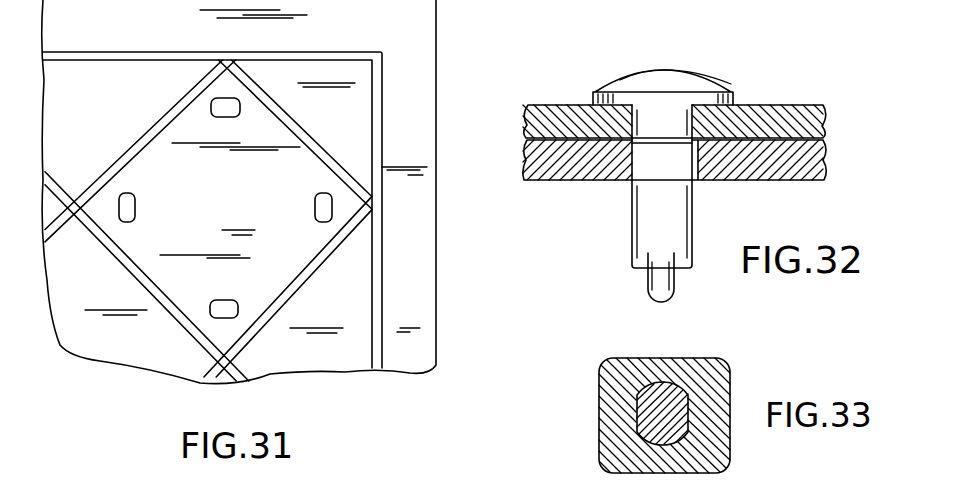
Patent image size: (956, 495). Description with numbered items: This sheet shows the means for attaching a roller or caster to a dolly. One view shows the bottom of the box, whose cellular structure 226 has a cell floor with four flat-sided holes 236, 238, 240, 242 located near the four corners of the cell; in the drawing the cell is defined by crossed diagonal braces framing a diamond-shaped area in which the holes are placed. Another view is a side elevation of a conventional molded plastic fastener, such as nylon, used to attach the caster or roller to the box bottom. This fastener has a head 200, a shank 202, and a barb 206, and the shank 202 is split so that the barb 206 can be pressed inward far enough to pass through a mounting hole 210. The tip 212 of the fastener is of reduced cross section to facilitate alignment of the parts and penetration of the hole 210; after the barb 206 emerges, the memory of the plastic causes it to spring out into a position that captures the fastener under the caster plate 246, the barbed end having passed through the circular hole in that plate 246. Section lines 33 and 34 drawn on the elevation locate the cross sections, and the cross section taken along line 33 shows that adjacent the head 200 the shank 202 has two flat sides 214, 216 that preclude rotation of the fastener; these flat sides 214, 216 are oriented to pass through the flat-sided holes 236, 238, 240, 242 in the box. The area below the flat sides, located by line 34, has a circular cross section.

In FIG. 32, the head 200 is at (699, 82).
In FIG. 32, the shank 202 is at (657, 118).
In FIG. 32, the barb 206 is at (672, 182).
In FIG. 32, the mounting hole 210 is at (702, 130).
In FIG. 32, the tip 212 is at (663, 280).
In FIG. 33, the flat side 214 is at (629, 408).
In FIG. 33, the flat side 216 is at (688, 410).
In FIG. 31, the cellular structure 226 is at (287, 147).
In FIG. 31, the hole 236 is at (333, 203).
In FIG. 33, the hole 236 is at (710, 467).
In FIG. 31, the hole 238 is at (238, 309).
In FIG. 31, the hole 240 is at (136, 208).
In FIG. 31, the hole 242 is at (213, 107).
In FIG. 31, the plate 246 is at (311, 490).
In FIG. 32, the section line 33— 33 is at (515, 117).
In FIG. 32, the section line 34— 34 is at (515, 157).